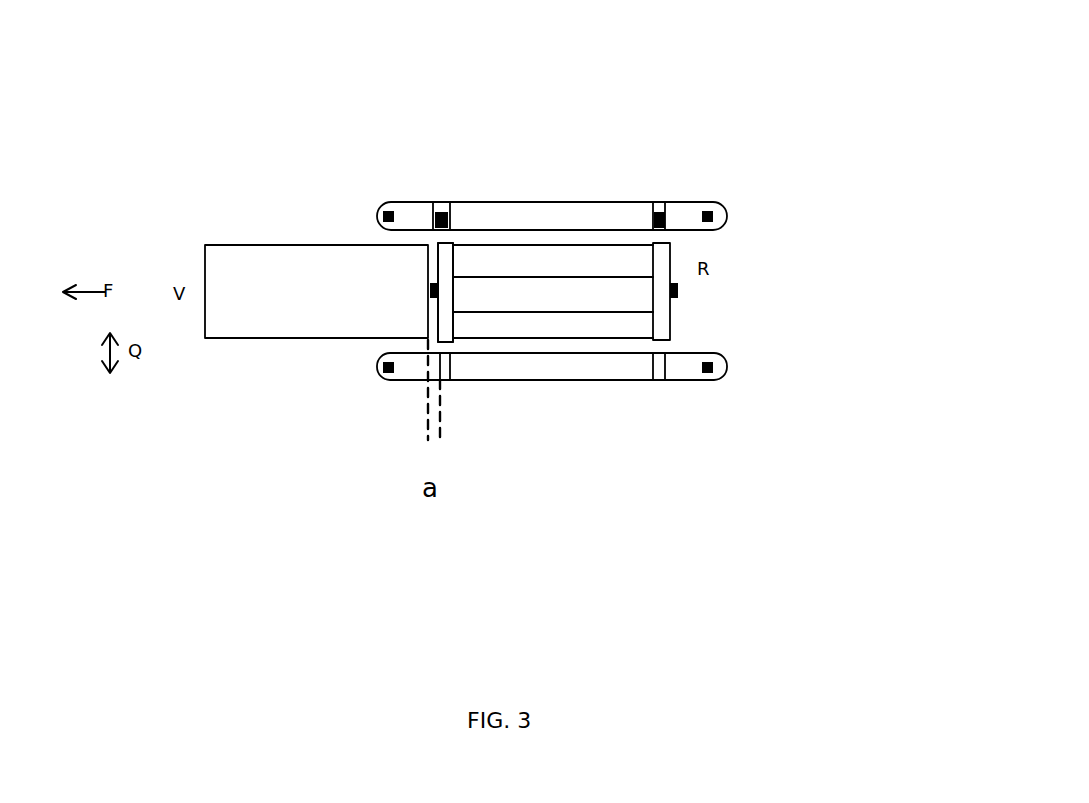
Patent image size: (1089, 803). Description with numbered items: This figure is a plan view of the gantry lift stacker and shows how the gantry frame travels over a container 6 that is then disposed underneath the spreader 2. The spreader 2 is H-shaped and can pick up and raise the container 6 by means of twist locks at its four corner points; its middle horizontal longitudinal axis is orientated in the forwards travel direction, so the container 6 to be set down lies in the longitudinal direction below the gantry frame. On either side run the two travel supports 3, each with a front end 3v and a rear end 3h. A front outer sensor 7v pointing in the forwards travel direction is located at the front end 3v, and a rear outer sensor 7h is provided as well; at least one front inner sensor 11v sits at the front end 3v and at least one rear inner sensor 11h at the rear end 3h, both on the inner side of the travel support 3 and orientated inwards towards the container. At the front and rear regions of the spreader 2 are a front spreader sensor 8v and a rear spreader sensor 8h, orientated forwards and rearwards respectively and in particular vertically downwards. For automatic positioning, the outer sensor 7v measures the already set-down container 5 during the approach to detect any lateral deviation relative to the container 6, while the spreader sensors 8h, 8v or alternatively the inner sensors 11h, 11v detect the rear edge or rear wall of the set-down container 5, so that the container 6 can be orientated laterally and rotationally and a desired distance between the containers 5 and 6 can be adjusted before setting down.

The spreader 2 is at (525, 290).
The travel support 3 is at (508, 215).
The front end of travel support 3v is at (383, 367).
The rear end of travel support 3h is at (720, 375).
The container 5 is at (237, 307).
The container 6 is at (437, 325).
The front outer sensor 7v is at (381, 202).
The rear outer sensor 7h is at (716, 203).
The front spreader sensor 8v is at (593, 325).
The rear spreader sensor 8h is at (675, 298).
The front inner sensor 11v is at (443, 210).
The rear inner sensor 11h is at (661, 212).